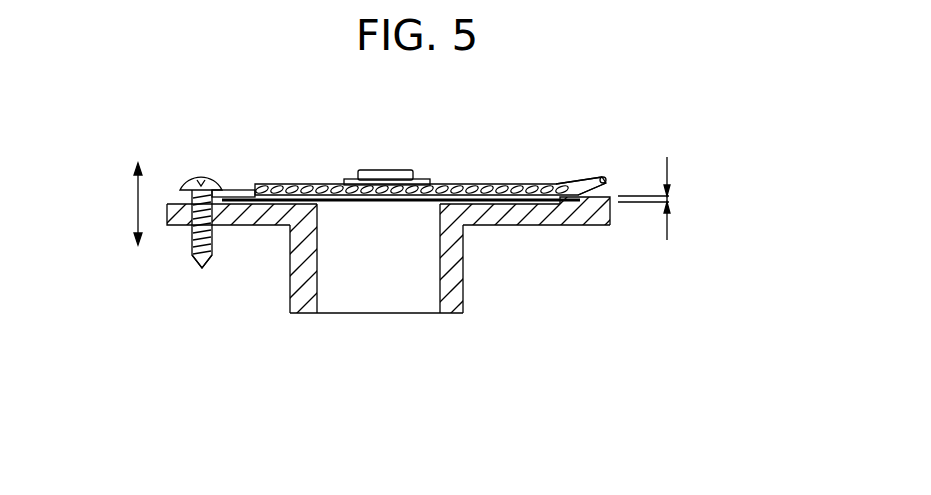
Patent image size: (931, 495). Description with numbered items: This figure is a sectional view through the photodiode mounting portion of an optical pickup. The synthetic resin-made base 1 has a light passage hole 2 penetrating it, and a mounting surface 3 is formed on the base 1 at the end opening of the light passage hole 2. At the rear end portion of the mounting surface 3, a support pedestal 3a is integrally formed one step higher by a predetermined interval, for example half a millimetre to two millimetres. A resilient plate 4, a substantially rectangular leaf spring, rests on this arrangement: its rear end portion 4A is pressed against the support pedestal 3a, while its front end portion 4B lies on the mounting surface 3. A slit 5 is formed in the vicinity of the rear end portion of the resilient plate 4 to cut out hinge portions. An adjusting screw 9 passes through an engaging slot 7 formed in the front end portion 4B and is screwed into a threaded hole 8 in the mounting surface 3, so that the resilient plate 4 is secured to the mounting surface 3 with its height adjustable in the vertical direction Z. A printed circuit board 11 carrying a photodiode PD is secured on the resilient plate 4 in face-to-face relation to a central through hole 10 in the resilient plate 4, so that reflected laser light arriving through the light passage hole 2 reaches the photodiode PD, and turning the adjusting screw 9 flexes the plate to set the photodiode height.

The base 1 is at (282, 307).
The light passage hole 2 is at (355, 300).
The mounting surface 3 is at (512, 206).
The support pedestal 3a is at (603, 226).
The resilient plate 4 is at (530, 176).
The rear end portion 4A is at (603, 176).
The front end portion 4B is at (242, 190).
The slit 5 is at (562, 188).
The engaging slot 7 is at (229, 217).
The threaded hole 8 is at (192, 246).
The adjusting screw 9 is at (200, 177).
The central through hole 10 is at (392, 201).
The printed circuit board 11 is at (310, 184).
The photodiode PD is at (387, 170).
The vertical direction Z is at (137, 204).